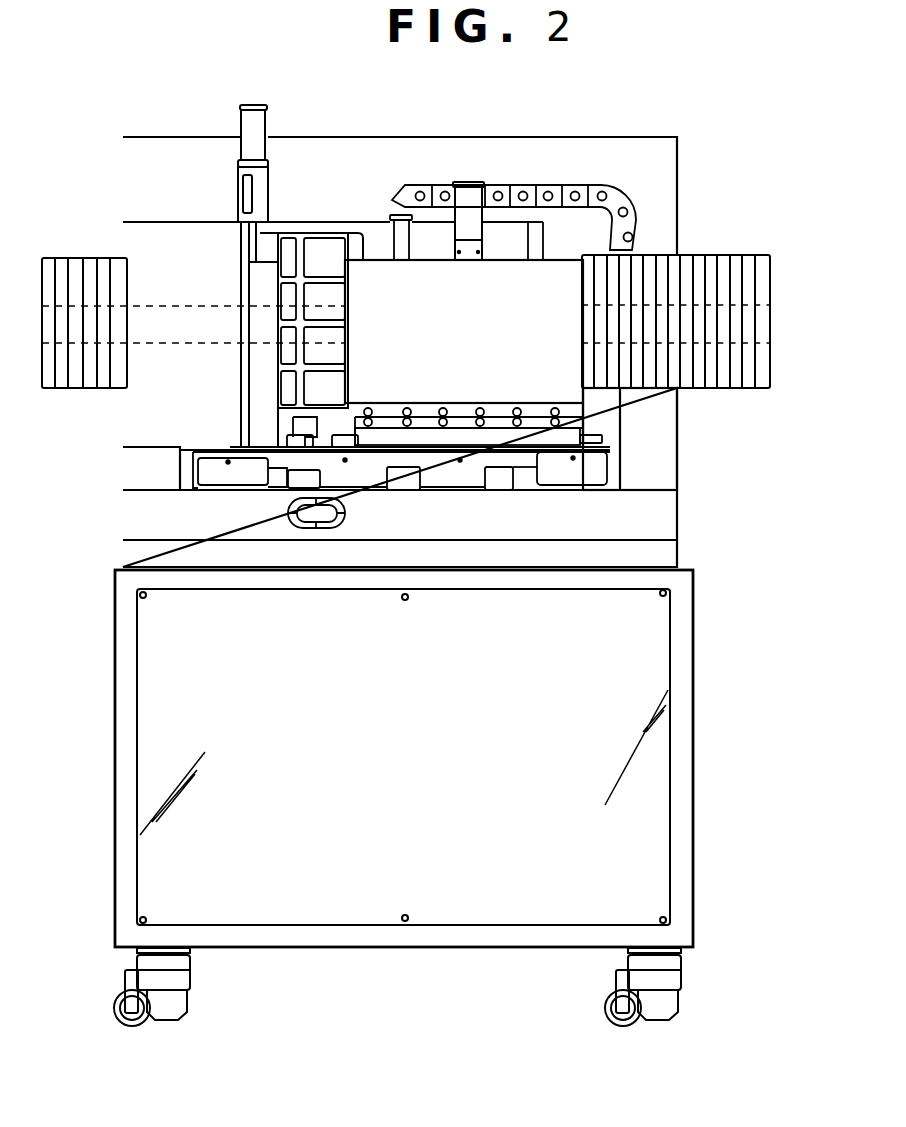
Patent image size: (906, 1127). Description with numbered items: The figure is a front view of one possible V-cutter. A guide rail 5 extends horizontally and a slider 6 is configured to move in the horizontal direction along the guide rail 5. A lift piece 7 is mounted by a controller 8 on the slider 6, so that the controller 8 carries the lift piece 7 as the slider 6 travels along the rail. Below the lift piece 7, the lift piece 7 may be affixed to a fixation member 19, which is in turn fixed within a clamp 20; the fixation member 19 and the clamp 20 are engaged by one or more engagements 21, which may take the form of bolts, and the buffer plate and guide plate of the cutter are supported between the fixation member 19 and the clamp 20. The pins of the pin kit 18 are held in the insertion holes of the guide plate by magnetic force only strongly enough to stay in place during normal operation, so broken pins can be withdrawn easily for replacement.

The guide rail 5 is at (705, 300).
The slider 6 is at (545, 227).
The lift piece 7 is at (557, 365).
The controller 8 is at (469, 197).
The pin kit 18 is at (598, 439).
The fixation member 19 is at (578, 410).
The clamp 20 is at (525, 425).
The engagements 21 is at (553, 437).